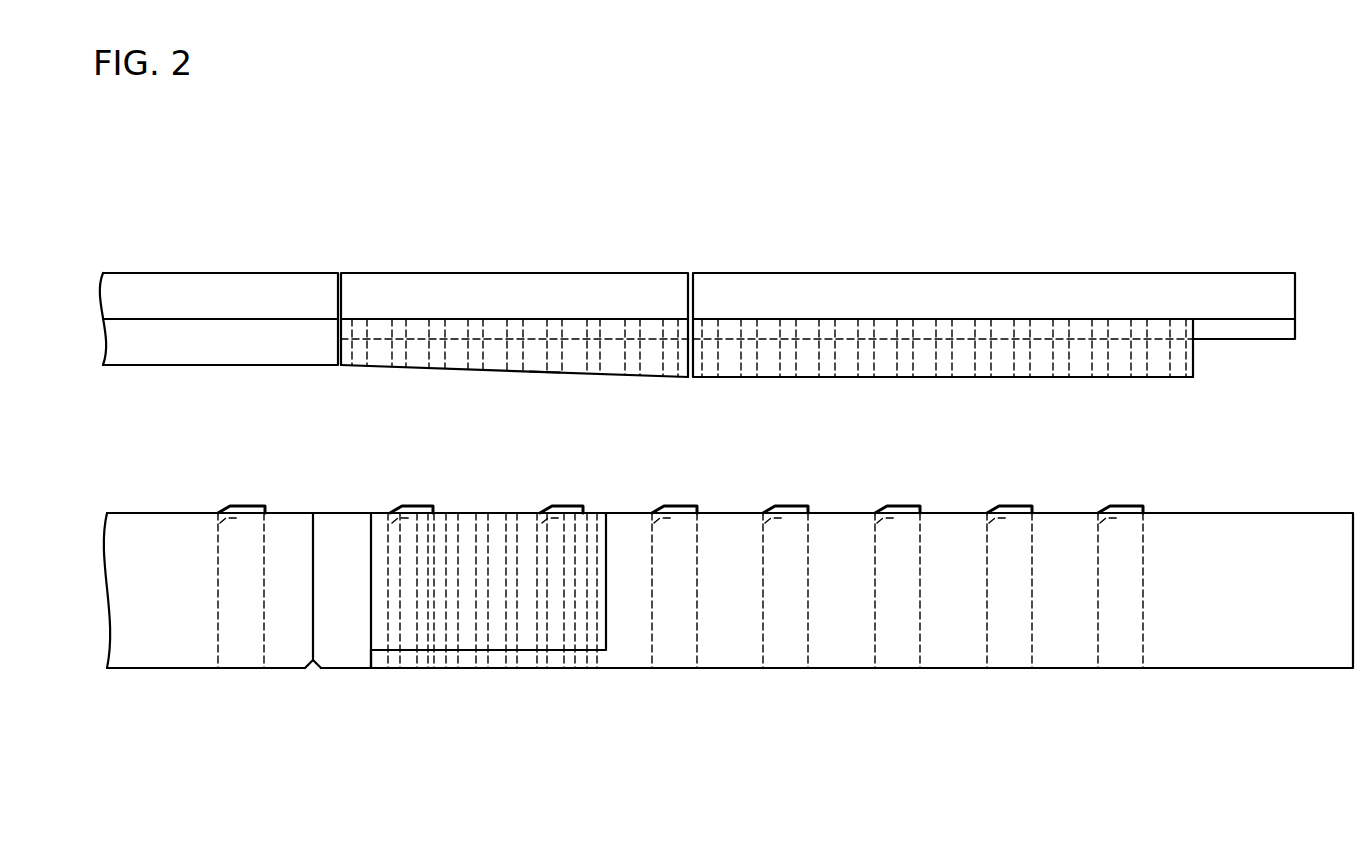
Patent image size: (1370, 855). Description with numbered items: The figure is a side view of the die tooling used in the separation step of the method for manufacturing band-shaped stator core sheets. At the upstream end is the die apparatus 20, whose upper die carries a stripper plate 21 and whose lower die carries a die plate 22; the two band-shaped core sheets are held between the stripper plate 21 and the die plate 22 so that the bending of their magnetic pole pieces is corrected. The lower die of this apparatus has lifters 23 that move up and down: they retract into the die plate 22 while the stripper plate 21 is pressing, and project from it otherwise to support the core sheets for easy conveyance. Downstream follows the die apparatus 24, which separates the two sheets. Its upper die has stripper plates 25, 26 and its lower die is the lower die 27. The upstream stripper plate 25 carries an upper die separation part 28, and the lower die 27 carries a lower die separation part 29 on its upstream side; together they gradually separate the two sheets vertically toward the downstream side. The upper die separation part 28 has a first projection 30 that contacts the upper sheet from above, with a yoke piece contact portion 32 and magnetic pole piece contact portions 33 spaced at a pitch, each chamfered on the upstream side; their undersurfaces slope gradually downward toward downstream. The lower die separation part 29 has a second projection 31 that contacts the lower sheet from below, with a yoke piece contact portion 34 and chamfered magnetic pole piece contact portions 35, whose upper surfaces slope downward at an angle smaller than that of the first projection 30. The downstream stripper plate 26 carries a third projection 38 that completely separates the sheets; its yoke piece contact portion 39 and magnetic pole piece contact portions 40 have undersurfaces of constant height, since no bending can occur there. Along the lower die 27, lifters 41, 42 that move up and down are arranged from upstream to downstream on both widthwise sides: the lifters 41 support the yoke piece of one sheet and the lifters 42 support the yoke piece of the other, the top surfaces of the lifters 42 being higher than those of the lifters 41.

The die apparatus 20 is at (157, 208).
The stripper plate 21 is at (233, 290).
The die plate 22 is at (182, 655).
The lifters 23 is at (247, 506).
The die apparatus 24 is at (648, 204).
The stripper plate 25 is at (550, 290).
The stripper plate 26 is at (932, 273).
The lower die 27 is at (1240, 650).
The upper die separation part 28 is at (452, 315).
The lower die separation part 29 is at (495, 675).
The first projection 30 is at (525, 378).
The second projection 31 is at (508, 510).
The yoke piece contact portion 32 is at (545, 380).
The magnetic pole piece contact portions 33 is at (450, 360).
The yoke piece contact portion 34 is at (473, 513).
The magnetic pole piece contact portions 35 is at (410, 668).
The third projection 38 is at (1152, 384).
The yoke piece contact portion 39 is at (1005, 378).
The magnetic pole piece contact portions 40 is at (805, 380).
The lifters 41 is at (390, 512).
The lifters 42 is at (418, 506).